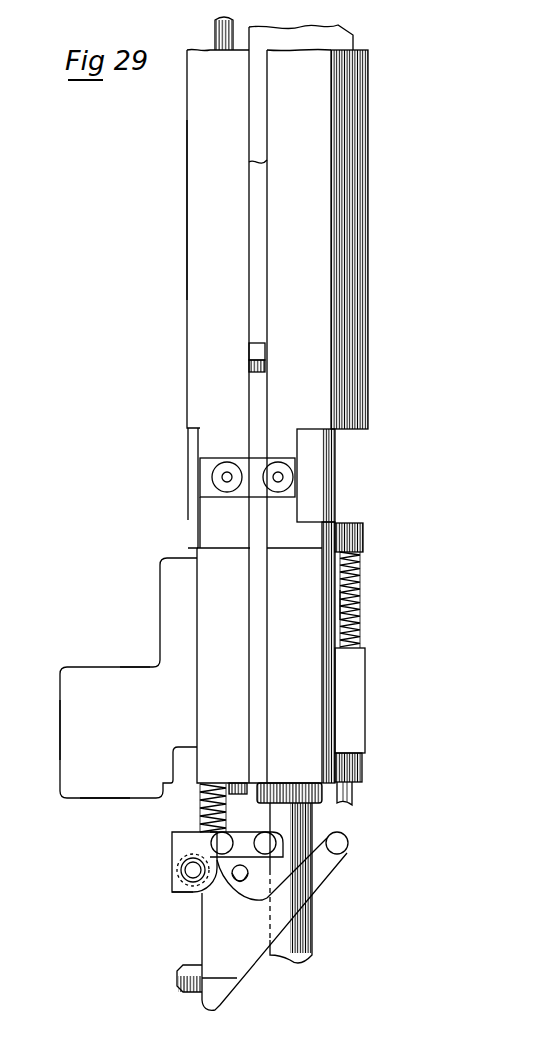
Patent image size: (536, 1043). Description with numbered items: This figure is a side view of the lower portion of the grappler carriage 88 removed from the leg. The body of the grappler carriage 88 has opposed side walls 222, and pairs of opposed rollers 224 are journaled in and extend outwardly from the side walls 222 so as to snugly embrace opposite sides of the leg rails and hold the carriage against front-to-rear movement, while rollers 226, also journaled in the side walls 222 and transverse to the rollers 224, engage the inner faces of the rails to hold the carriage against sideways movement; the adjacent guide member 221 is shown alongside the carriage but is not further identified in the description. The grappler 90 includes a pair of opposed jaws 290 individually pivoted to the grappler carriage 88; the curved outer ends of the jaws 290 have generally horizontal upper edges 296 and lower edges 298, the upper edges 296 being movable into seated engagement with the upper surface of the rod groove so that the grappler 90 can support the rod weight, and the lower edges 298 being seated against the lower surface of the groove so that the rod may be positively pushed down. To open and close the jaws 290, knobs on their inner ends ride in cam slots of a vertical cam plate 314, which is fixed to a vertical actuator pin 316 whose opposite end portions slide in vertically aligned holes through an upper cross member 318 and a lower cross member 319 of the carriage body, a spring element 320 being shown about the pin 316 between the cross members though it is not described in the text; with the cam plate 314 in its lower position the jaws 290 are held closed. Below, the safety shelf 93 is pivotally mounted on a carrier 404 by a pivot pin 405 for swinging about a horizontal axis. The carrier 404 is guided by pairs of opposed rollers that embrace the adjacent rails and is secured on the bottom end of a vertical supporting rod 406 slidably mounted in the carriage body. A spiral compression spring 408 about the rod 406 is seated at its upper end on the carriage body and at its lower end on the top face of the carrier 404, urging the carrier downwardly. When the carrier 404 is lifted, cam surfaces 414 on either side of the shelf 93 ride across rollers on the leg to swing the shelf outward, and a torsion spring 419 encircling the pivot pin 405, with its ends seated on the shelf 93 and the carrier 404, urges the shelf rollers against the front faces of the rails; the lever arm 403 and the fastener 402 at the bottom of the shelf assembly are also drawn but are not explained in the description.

The grappler carriage 88 is at (183, 233).
The grappler 90 is at (57, 686).
The safety shelf 93 is at (283, 911).
The guide bar 221 is at (262, 252).
The side walls 222 is at (197, 362).
The rollers 224 is at (278, 477).
The rollers 226 is at (258, 352).
The jaws 290 is at (75, 731).
The upper edges 296 is at (105, 667).
The lower edges 298 is at (90, 803).
The cam plate 314 is at (358, 665).
The actuator pin 316 is at (357, 562).
The upper cross member 318 is at (363, 530).
The lower cross member 319 is at (358, 762).
The compression spring 320 is at (360, 598).
The nut 402 is at (177, 980).
The lever 403 is at (202, 947).
The carrier 404 is at (172, 851).
The pivot pin 405 is at (195, 888).
The supporting rod 406 is at (200, 796).
The compression spring 408 is at (215, 836).
The cam surfaces 414 is at (240, 881).
The torsion spring 419 is at (185, 878).